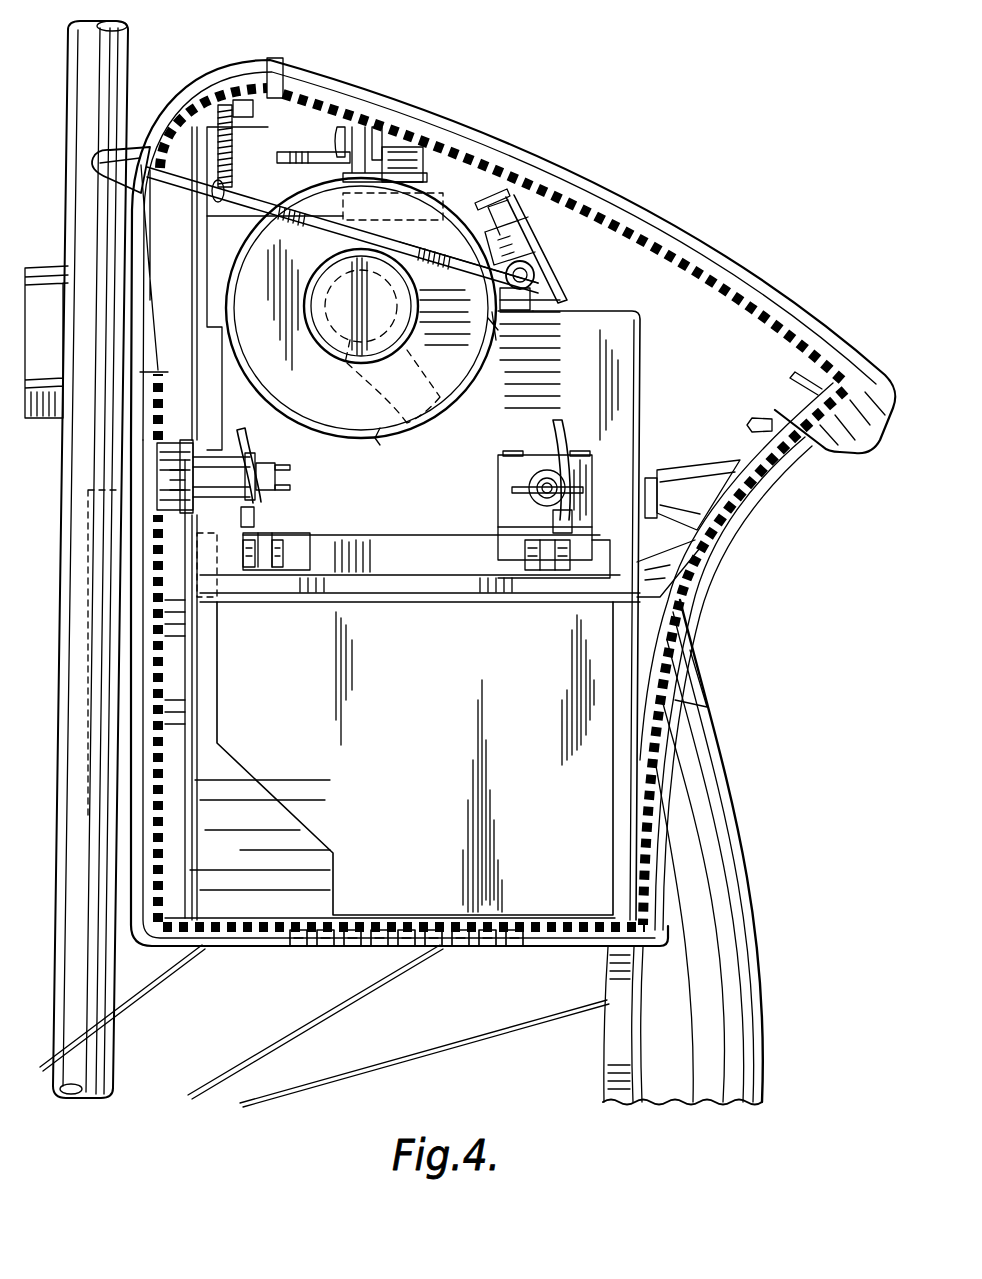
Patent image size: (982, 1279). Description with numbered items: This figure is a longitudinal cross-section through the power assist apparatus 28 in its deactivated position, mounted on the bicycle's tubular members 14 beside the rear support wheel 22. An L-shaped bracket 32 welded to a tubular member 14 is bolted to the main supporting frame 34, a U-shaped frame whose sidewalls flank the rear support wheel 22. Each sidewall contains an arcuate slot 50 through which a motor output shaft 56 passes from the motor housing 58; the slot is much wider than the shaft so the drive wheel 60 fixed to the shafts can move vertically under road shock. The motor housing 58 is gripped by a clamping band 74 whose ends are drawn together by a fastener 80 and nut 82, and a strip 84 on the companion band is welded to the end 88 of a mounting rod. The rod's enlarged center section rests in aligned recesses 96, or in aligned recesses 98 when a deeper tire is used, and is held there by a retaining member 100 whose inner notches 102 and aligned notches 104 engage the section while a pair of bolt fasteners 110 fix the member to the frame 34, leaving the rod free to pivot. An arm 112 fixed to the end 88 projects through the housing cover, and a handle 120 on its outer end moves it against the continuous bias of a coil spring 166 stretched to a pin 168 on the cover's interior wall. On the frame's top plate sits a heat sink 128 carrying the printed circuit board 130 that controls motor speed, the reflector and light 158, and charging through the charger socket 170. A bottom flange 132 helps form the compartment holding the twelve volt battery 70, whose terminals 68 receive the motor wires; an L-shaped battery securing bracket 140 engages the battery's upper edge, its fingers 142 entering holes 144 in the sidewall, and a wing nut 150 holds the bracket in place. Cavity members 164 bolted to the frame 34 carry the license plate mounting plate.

The tubular member 14 is at (118, 1052).
The rear support wheel 22 is at (742, 820).
The power assist apparatus 28 is at (684, 165).
The L-shaped bracket 32 is at (215, 661).
The main supporting frame 34 is at (632, 378).
The arcuate slot 50 is at (362, 386).
The output shaft 56 is at (430, 327).
The motor housing 58 is at (375, 430).
The drive wheel 60 is at (430, 304).
The terminals 68 is at (265, 540).
The battery 70 is at (432, 703).
The clamping band 74 is at (440, 206).
The fastener 80 is at (325, 64).
The nut 82 is at (392, 92).
The strip 84 is at (468, 283).
The end of mounting rod 88 is at (520, 318).
The aligned recesses 96 is at (526, 342).
The aligned recesses 98 is at (545, 240).
The retaining member 100 is at (562, 258).
The notches 102 is at (582, 278).
The aligned notches 104 is at (580, 193).
The bolt fasteners 110 is at (544, 181).
The arm 112 is at (330, 234).
The handle 120 is at (140, 112).
The heat sink 128 is at (478, 138).
The printed circuit board 130 is at (440, 120).
The bottom flange 132 is at (540, 943).
The battery securing bracket 140 is at (585, 470).
The fingers 142 is at (540, 452).
The holes 144 is at (556, 427).
The wing nut 150 is at (512, 484).
The reflector and light 158 is at (855, 448).
The cavity members 164 is at (680, 476).
The coil spring 166 is at (262, 150).
The pin 168 is at (245, 76).
The charger socket 170 is at (237, 463).